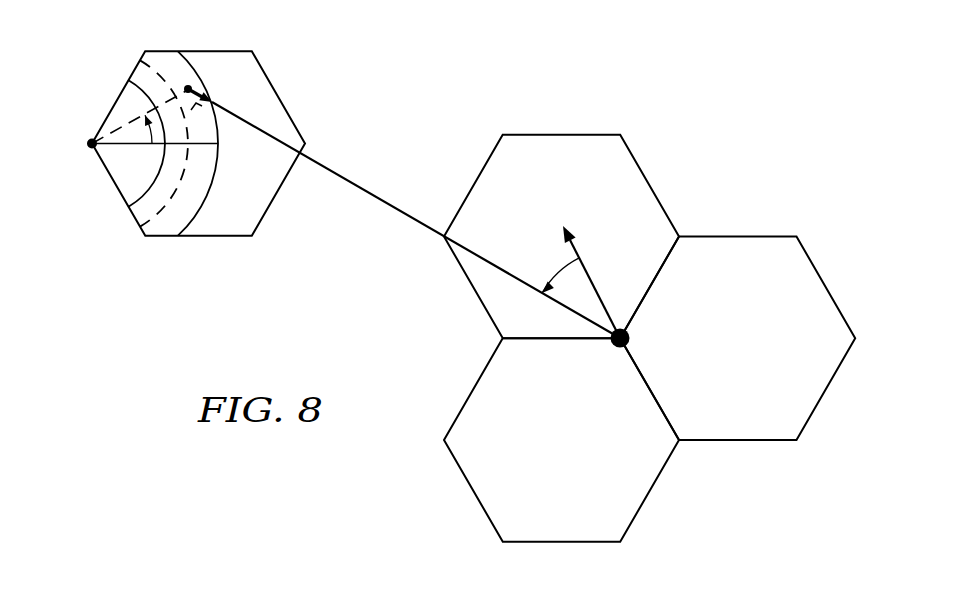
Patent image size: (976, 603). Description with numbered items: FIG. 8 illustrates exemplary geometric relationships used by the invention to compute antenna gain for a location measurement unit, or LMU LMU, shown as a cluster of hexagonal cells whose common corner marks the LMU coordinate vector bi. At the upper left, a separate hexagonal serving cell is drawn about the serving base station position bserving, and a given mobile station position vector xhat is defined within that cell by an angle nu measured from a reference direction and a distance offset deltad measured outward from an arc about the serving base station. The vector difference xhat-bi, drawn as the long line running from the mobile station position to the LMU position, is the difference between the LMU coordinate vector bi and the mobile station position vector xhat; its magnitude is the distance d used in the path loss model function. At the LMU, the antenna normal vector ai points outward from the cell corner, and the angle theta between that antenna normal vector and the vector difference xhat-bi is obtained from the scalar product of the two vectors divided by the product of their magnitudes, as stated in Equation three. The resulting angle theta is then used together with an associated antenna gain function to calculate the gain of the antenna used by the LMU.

The serving base station position b_serving bserving is at (89, 147).
The angle v nu is at (120, 135).
The mobile station position vector xhat is at (189, 85).
The distance offset Δd deltad is at (191, 106).
The vector difference xhat-bi is at (328, 167).
The element LMU is at (455, 312).
The LMU coordinate vector bi is at (630, 338).
The antenna normal vector ai is at (598, 292).
The angle θ theta is at (563, 283).